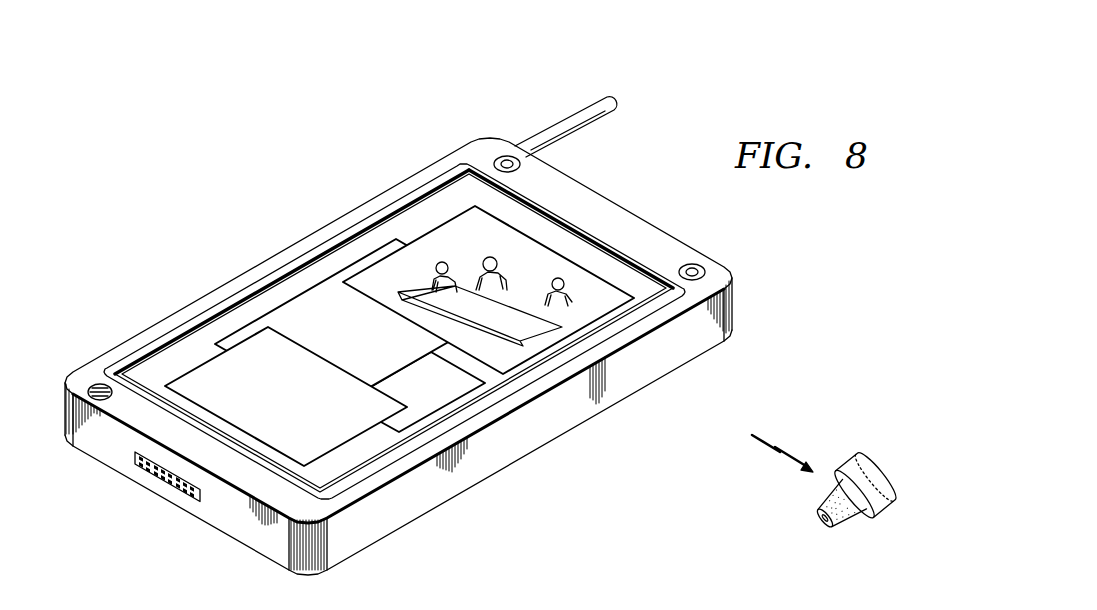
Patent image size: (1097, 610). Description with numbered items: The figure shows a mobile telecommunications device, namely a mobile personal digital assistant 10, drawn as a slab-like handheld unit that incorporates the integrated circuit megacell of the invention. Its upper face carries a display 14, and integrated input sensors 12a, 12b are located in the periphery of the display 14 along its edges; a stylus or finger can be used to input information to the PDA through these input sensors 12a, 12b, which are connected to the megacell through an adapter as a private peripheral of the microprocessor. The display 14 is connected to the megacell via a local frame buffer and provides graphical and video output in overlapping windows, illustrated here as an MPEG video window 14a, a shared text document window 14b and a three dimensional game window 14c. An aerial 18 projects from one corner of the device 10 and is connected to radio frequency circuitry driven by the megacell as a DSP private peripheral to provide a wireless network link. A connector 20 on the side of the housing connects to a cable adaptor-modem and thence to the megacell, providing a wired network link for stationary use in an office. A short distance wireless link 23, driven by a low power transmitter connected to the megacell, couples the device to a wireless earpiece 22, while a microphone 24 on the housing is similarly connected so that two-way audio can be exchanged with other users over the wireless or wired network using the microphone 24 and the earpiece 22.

The mobile personal digital assistant 10 is at (618, 444).
The integrated input sensor 12a is at (353, 240).
The integrated input sensor 12b is at (596, 243).
The display 14 is at (153, 377).
The MPEG video window 14a is at (443, 242).
The shared text document window 14b is at (312, 297).
The three dimensional game window 14c is at (213, 370).
The aerial 18 is at (563, 122).
The connector 20 is at (146, 471).
The earpiece 22 is at (880, 486).
The short distance wireless link 23 is at (793, 447).
The microphone 24 is at (93, 383).